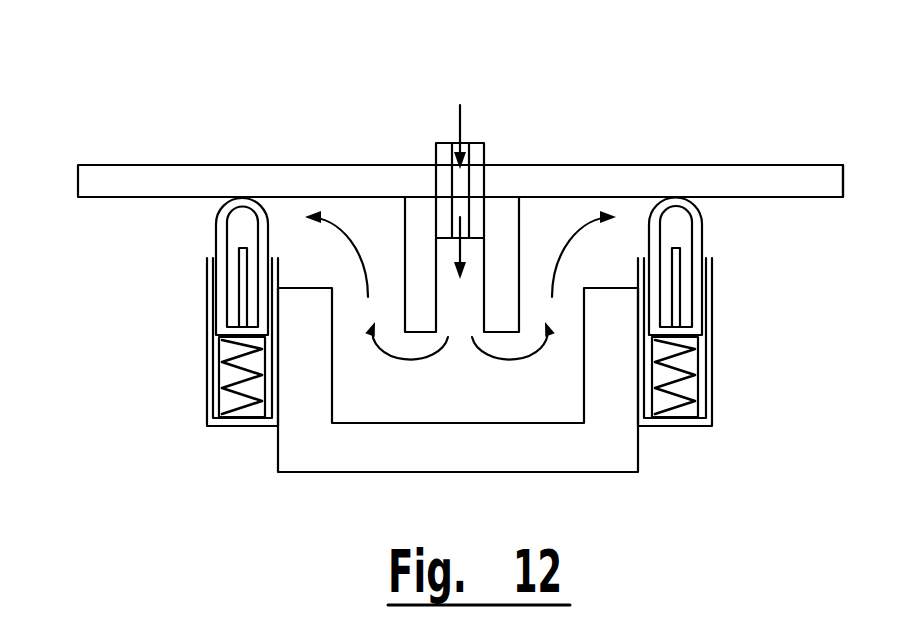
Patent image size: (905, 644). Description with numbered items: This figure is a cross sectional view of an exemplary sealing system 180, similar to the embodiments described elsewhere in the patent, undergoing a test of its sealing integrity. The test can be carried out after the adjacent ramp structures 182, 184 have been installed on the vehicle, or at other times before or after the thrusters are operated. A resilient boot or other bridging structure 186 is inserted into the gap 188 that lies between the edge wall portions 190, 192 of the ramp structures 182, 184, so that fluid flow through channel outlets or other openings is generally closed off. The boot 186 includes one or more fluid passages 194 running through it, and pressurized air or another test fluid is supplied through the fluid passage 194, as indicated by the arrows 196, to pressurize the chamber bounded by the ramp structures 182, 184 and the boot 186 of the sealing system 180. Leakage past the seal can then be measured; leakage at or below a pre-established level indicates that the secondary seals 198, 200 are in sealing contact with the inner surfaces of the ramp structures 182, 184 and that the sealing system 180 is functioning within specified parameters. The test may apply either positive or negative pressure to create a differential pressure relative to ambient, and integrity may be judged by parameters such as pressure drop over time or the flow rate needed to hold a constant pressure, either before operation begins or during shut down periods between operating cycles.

The sealing system 180 is at (621, 483).
The ramp structure 182 is at (180, 166).
The ramp structure 184 is at (750, 165).
The bridging structure 186 is at (489, 140).
The gap 188 is at (463, 297).
The edge wall portion 190 is at (427, 225).
The edge wall portion 192 is at (502, 227).
The fluid passage 194 is at (459, 173).
The arrows 196 is at (455, 308).
The secondary seal 198 is at (215, 237).
The secondary seal 200 is at (678, 230).